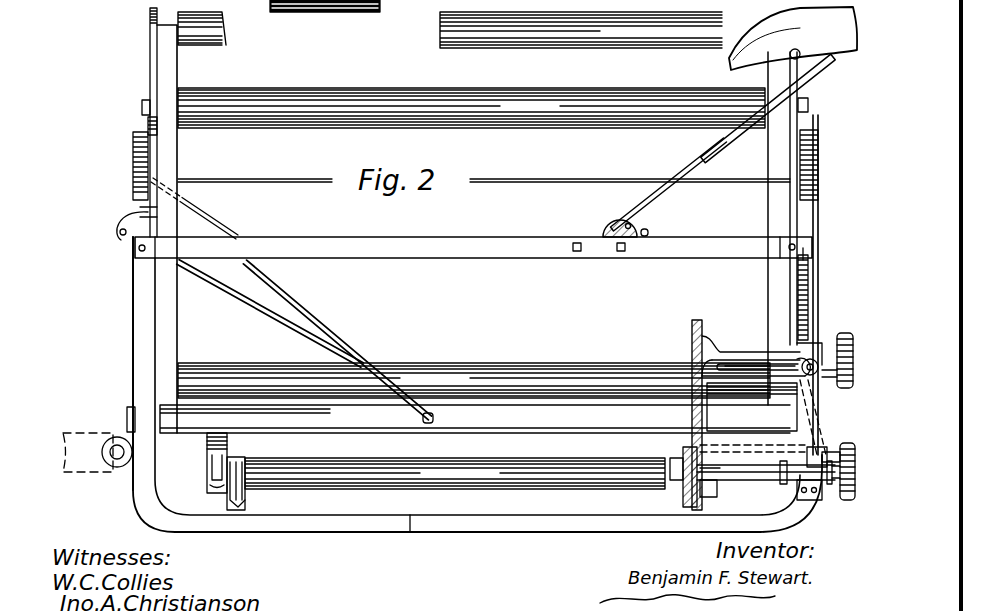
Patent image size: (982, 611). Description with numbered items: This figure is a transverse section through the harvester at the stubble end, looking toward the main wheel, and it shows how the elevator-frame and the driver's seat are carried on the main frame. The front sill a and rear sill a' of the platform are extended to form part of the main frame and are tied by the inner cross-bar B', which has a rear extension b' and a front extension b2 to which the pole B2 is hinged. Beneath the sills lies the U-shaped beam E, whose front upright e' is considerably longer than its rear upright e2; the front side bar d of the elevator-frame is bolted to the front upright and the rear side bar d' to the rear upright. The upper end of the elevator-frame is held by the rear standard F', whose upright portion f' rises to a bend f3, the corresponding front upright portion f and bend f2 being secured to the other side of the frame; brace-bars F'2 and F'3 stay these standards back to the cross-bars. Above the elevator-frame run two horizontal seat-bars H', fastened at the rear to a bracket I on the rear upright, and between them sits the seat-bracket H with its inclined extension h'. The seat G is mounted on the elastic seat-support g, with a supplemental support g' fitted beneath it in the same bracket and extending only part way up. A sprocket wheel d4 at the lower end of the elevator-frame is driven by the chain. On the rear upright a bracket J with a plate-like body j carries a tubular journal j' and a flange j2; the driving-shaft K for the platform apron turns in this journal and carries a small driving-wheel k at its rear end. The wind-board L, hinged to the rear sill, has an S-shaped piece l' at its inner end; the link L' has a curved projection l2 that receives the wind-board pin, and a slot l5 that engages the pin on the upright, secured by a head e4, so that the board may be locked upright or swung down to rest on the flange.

The front side bar d is at (127, 122).
The rear side bar d' is at (819, 198).
The sprocket wheel d4 is at (845, 333).
The upright portion of front standard f is at (117, 255).
The upright portion of rear standard f' is at (820, 297).
The bend of front standard f2 is at (133, 158).
The bend of rear standard f3 is at (818, 162).
The rear standard F' is at (457, 240).
The brace-bar F'2 is at (338, 341).
The brace-bar F'3 is at (270, 313).
The front upright e' is at (249, 401).
The rear upright e2 is at (792, 450).
The head e4 is at (802, 358).
The U-shaped beam E is at (482, 527).
The seat-bracket H is at (610, 224).
The horizontal bars H' is at (473, 264).
The inclined extension h' is at (629, 209).
The elastic seat-support g is at (745, 108).
The supplemental support g' is at (669, 184).
The seat G is at (793, 38).
The inner cross-bar B' is at (475, 222).
The pole B2 is at (72, 434).
The rear extension of inner cross-bar b' is at (752, 408).
The front extension of inner cross-bar b2 is at (200, 428).
The front sill a is at (420, 483).
The rear sill a' is at (728, 505).
The bracket I is at (800, 290).
The wind-board L is at (664, 415).
The link L' is at (757, 342).
The S-shaped piece l' is at (714, 392).
The curved projection l2 is at (712, 340).
The slot l5 is at (752, 365).
The bracket J is at (812, 502).
The plate-like body j is at (800, 490).
The tubular journal j' is at (746, 485).
The flange j2 is at (830, 462).
The driving-shaft K is at (850, 500).
The driving-wheel k is at (700, 515).